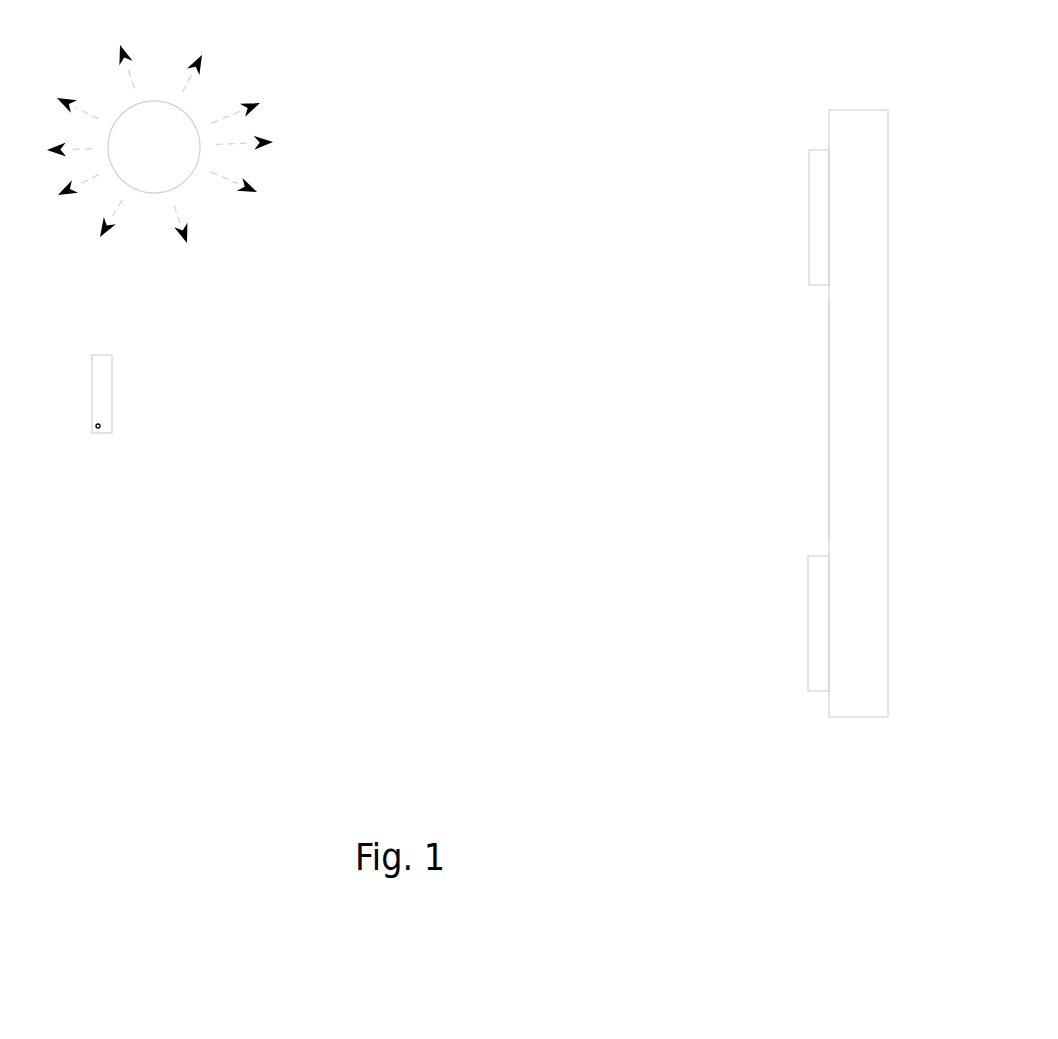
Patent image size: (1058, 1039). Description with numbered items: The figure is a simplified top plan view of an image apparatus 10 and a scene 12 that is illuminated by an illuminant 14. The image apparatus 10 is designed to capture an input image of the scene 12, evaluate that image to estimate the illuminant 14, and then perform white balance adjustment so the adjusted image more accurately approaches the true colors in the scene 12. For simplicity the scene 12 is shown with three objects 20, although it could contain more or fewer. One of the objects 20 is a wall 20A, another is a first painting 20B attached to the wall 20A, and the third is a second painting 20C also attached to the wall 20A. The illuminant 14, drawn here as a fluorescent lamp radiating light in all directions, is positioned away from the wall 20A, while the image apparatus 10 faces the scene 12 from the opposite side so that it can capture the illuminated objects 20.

The image apparatus 10 is at (120, 387).
The scene 12 is at (417, 555).
The illuminant 14 is at (167, 155).
The objects 20 is at (783, 362).
The wall 20A is at (852, 372).
The first painting 20B is at (817, 209).
The second painting 20C is at (818, 622).